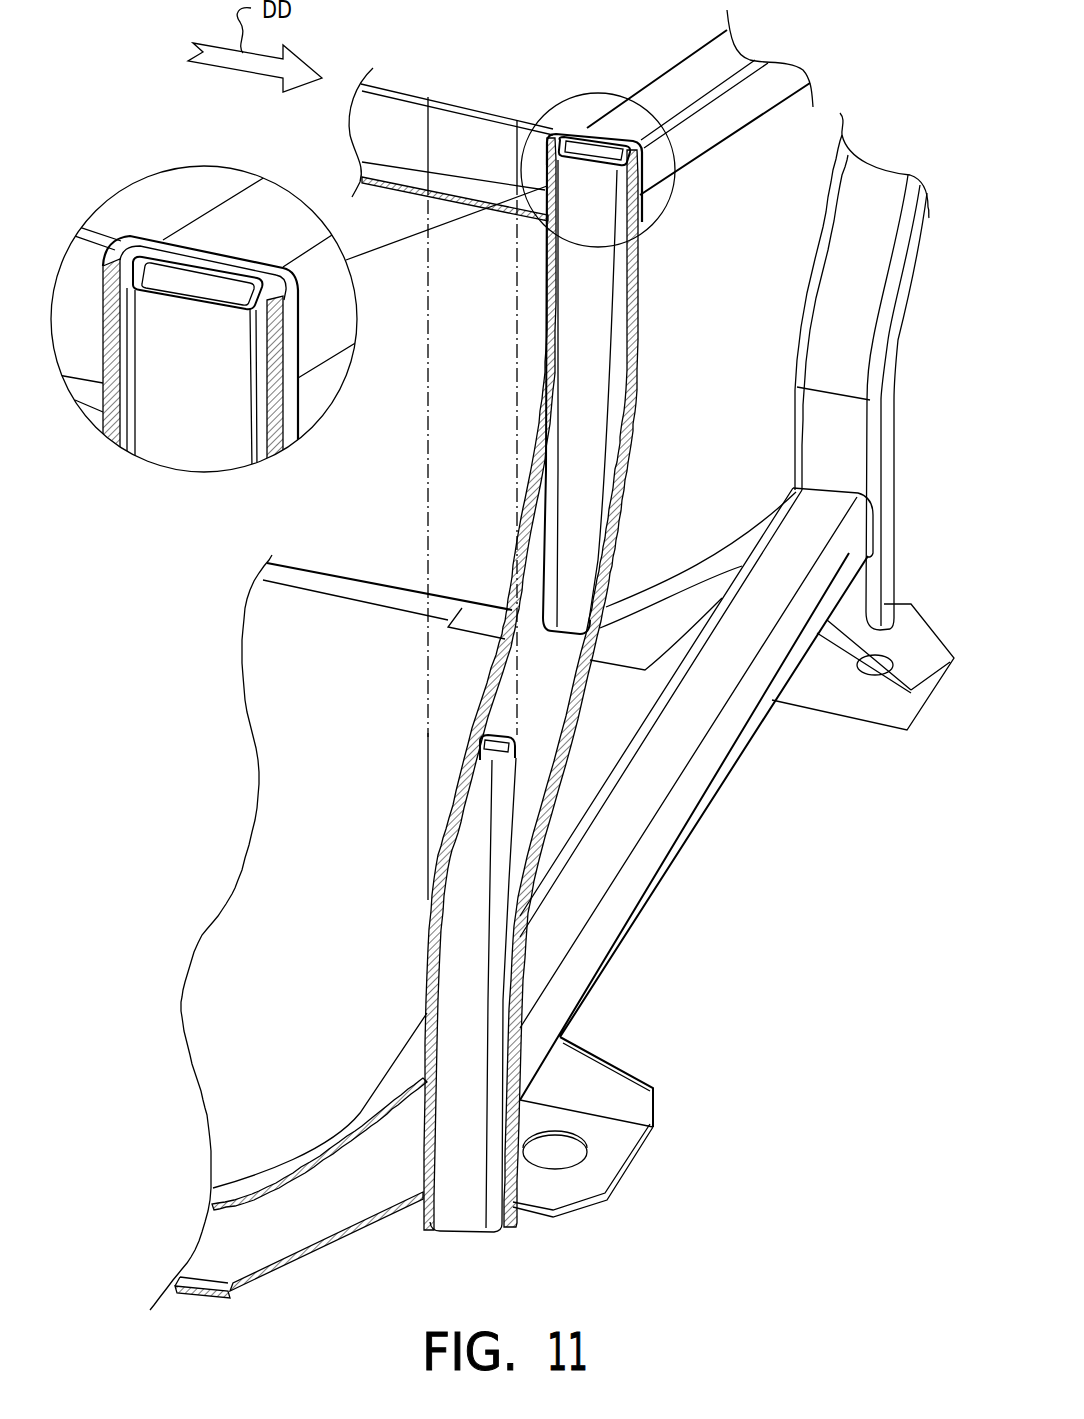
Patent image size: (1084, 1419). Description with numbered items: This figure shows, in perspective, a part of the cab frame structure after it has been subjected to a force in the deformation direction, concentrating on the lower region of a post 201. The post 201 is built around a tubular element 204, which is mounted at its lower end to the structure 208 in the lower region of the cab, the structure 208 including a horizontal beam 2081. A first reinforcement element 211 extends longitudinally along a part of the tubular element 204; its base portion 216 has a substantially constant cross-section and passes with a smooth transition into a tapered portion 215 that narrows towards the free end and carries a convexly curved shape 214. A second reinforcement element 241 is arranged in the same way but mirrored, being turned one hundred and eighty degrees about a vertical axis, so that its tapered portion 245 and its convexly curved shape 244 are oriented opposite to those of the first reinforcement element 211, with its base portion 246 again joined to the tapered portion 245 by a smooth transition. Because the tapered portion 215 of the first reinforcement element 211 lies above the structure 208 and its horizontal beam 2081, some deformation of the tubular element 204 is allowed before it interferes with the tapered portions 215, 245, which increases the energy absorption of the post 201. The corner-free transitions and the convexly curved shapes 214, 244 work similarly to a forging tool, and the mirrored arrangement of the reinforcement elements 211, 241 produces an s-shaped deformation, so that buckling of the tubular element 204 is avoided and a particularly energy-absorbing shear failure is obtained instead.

The post 201 is at (643, 307).
The tubular element 204 is at (470, 695).
The structure 208 is at (297, 1218).
The first reinforcement element 211 is at (463, 949).
The convexly curved shape 214 is at (437, 857).
The tapered portion 215 is at (477, 827).
The base portion 216 is at (462, 1187).
The second reinforcement element 241 is at (590, 380).
The convexly curved shape 244 is at (610, 498).
The tapered portion 245 is at (582, 472).
The base portion 246 is at (592, 267).
The horizontal beam 2081 is at (640, 803).